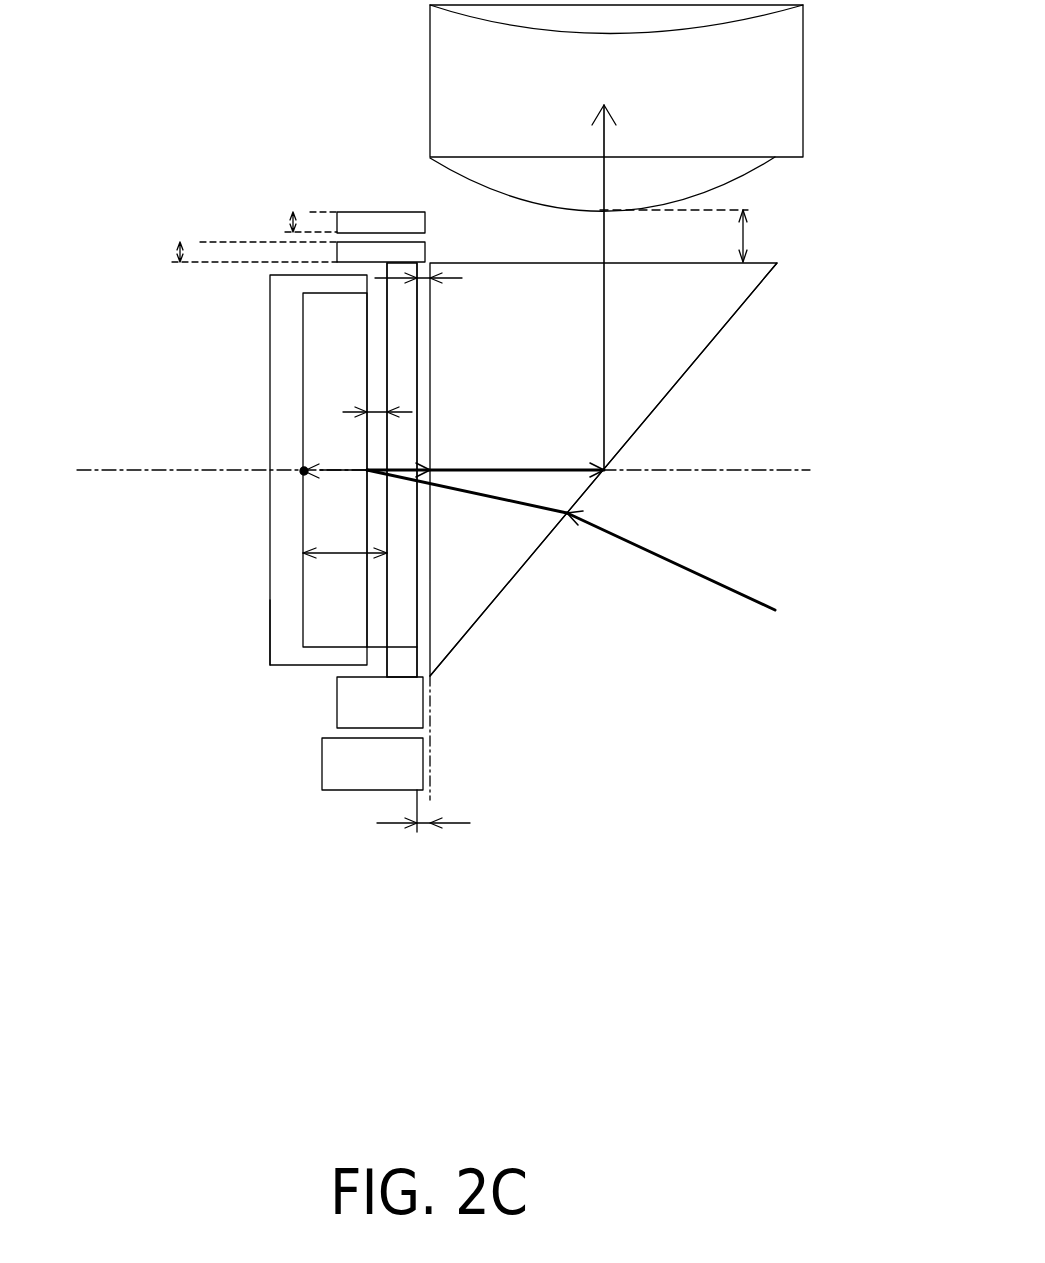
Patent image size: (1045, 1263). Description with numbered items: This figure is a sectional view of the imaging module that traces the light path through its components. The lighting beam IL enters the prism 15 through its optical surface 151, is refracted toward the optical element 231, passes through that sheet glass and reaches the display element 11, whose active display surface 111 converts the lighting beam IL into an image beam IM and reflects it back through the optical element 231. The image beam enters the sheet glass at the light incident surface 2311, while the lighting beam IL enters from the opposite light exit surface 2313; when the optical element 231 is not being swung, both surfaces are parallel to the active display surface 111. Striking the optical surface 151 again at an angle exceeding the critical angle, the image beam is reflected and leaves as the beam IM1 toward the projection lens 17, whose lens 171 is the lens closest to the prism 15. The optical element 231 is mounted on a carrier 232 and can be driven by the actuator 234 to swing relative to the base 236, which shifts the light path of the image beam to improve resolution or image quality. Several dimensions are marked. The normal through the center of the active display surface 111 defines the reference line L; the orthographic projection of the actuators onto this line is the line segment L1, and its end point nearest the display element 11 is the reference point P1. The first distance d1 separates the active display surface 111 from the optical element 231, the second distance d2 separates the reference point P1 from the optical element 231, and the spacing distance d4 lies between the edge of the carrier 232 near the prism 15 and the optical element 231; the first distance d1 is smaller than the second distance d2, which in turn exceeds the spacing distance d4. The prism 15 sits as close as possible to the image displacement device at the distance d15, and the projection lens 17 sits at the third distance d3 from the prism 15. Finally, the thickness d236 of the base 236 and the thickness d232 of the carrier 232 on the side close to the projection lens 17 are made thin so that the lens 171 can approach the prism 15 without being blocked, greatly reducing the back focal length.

The display element 11 is at (270, 300).
The active display surface 111 is at (381, 333).
The prism 15 is at (703, 307).
The optical surface 151 is at (695, 362).
The projection lens 17 is at (788, 80).
The lens 171 is at (724, 164).
The optical element 231 is at (397, 610).
The light incident surface 2311 is at (385, 580).
The light exit surface 2313 is at (418, 580).
The carrier 232 is at (382, 255).
The actuator 234 is at (268, 618).
The base 236 is at (346, 228).
The first distance d1 is at (372, 412).
The second distance d2 is at (340, 553).
The third distance d3 is at (746, 212).
The spacing distance d4 is at (441, 300).
The distance d15 is at (423, 838).
The thickness of the carrier d232 is at (211, 239).
The thickness of the base d236 is at (268, 221).
The reference line L is at (89, 470).
The line segment L1 is at (345, 473).
The reference point P1 is at (304, 470).
The image light IM is at (402, 468).
The output image light IM1 is at (605, 262).
The lighting beam IL is at (697, 575).